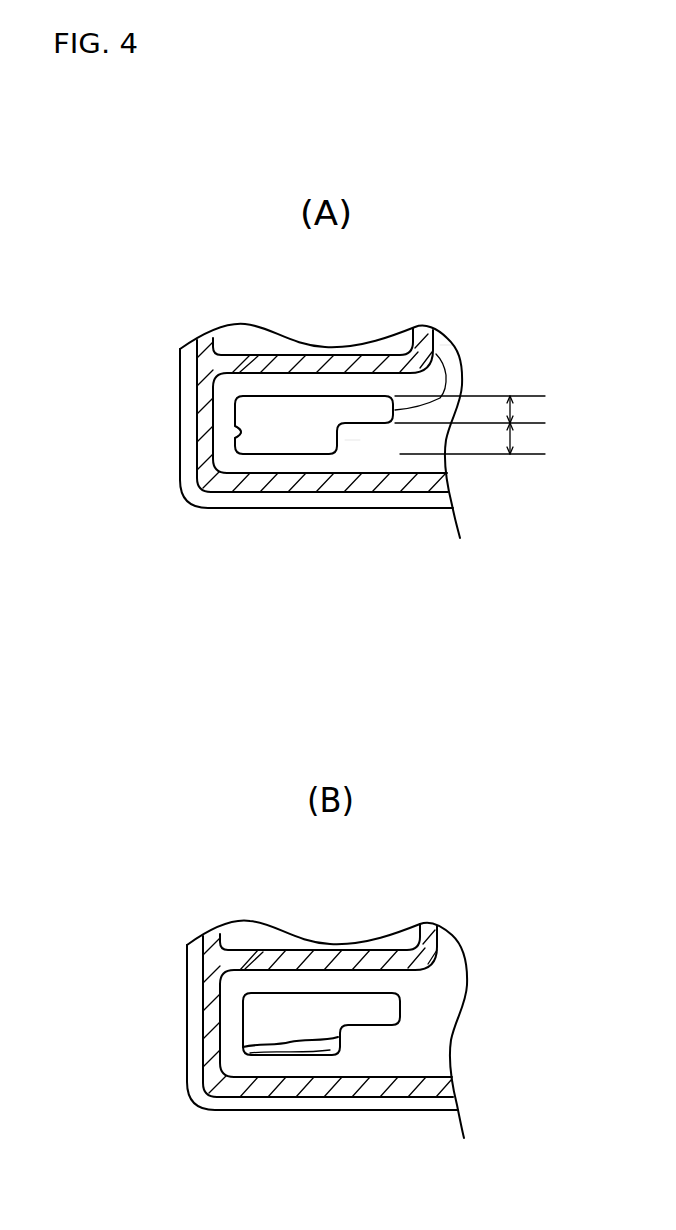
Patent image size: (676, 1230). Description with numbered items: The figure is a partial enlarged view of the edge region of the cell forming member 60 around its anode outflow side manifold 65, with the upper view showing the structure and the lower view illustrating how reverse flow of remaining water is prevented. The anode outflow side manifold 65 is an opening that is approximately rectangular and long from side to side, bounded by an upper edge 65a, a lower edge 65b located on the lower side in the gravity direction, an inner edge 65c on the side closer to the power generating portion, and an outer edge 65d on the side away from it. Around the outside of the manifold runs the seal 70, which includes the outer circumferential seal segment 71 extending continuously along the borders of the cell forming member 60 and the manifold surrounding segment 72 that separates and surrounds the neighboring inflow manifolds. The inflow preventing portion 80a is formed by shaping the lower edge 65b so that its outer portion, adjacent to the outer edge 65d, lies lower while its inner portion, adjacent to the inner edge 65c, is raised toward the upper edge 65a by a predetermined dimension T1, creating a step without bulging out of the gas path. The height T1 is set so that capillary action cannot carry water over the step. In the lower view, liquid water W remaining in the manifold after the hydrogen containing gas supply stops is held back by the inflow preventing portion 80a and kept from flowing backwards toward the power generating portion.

The cell forming member 60 is at (178, 483).
The anode outflow side manifold 65 is at (233, 376).
The upper edge of anode outflow side manifold 65a is at (237, 390).
The lower edge of anode outflow side manifold 65b is at (235, 474).
The inner edge of anode outflow side manifold 65c is at (450, 345).
The outer edge of anode outflow side manifold 65d is at (243, 432).
The seal 70 is at (200, 505).
The outer circumferential seal segment 71 is at (203, 393).
The manifold surrounding segment 72 is at (262, 362).
The inflow preventing portion 80a is at (358, 435).
The height of raised inner portion T1 is at (507, 446).
The liquid water W is at (290, 1038).